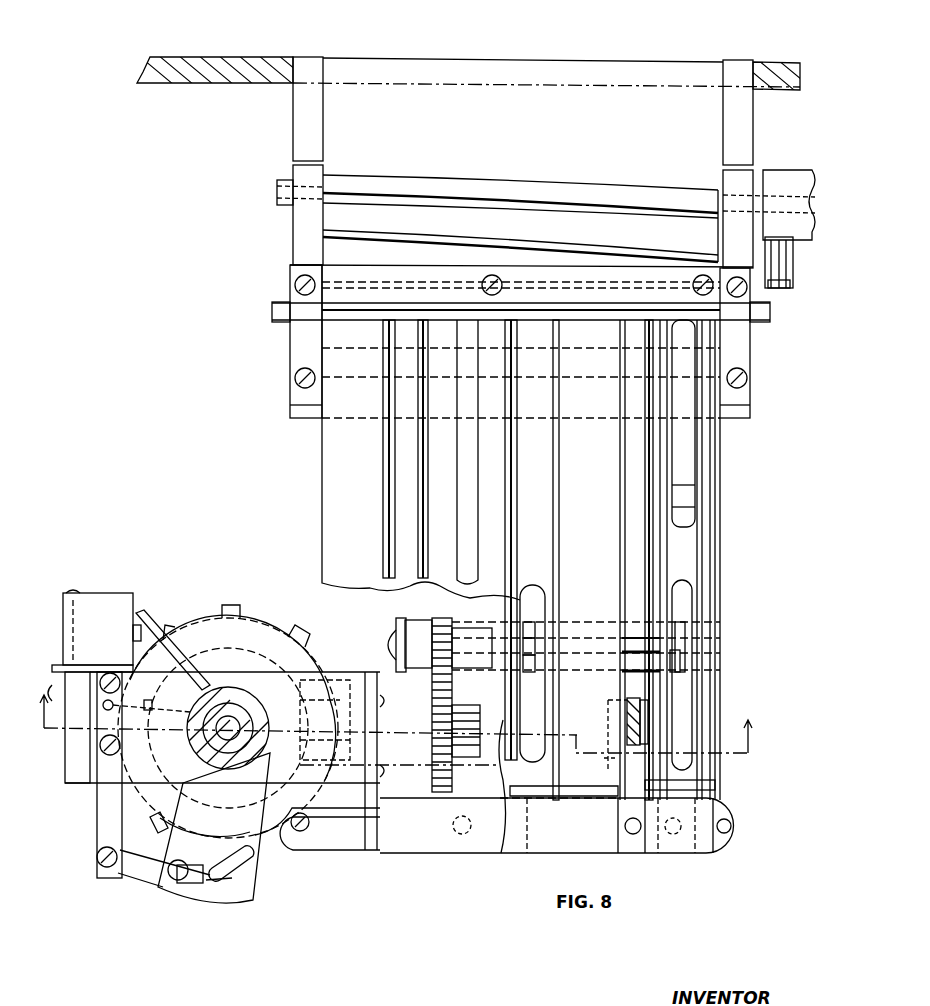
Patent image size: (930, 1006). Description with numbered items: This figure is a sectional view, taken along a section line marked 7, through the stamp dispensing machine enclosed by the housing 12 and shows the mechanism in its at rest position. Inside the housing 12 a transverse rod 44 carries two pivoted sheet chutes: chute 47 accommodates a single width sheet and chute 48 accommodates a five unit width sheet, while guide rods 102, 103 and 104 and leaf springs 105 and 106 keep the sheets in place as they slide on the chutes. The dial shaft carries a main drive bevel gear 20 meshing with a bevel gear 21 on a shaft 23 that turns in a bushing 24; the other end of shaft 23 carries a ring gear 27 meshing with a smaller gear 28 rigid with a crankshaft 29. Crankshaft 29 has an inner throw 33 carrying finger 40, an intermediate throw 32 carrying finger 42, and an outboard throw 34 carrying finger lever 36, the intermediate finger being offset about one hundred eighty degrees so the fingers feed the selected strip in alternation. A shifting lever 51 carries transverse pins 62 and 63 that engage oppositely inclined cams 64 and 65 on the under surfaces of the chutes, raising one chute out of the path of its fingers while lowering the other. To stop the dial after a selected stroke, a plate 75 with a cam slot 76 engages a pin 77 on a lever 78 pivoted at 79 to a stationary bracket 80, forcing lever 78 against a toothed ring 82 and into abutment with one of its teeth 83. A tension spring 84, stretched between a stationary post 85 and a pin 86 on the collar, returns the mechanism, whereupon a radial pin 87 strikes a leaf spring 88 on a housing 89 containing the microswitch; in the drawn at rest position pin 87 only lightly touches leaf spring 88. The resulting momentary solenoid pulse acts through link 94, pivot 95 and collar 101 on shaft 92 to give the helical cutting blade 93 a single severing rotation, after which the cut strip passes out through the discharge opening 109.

The housing 12 is at (282, 48).
The discharge opening 109 is at (549, 80).
The shaft 92 is at (323, 185).
The cutting blade 93 is at (383, 222).
The collar 101 is at (795, 172).
The link 94 is at (790, 245).
The pivot 95 is at (788, 278).
The transverse rod 44 is at (718, 324).
The sheet chute 48 is at (326, 528).
The guide rod 102 is at (415, 488).
The leaf spring 105 is at (470, 458).
The guide rod 103 is at (520, 468).
The shaft 29 is at (472, 640).
The leaf spring 106 is at (690, 457).
The guide rod 104 is at (700, 532).
The sheet chute 47 is at (712, 568).
The smaller gear 28 is at (443, 618).
The crankshaft throw 33 is at (415, 630).
The finger 40 is at (405, 657).
The finger 42 is at (535, 630).
The crankshaft throw 32 is at (538, 662).
The finger lever 36 is at (687, 634).
The crankshaft throw 34 is at (680, 672).
The transverse pin 62 is at (608, 722).
The shifting lever 51 is at (640, 722).
The transverse pin 63 is at (645, 732).
The cam 64 is at (606, 762).
The cam 65 is at (714, 783).
The section line 7- 7 is at (394, 725).
The bushing 24 is at (400, 762).
The ring gear 27 is at (454, 783).
The bevel gear 21 is at (330, 800).
The housing 89 is at (100, 602).
The stationary post 85 is at (100, 680).
The stationary bracket 80 is at (108, 819).
The pivot 79 is at (104, 868).
The main drive bevel gear 20 is at (312, 650).
The ring 82 is at (262, 630).
The teeth 83 is at (235, 606).
The pin 87 is at (150, 622).
The leaf spring 88 is at (140, 625).
The pin 86 is at (175, 703).
The tension spring 84 is at (140, 712).
The shaft 23 is at (340, 690).
The lever 78 is at (140, 868).
The pin 77 is at (178, 882).
The plate 75 is at (255, 856).
The cam slot 76 is at (236, 879).